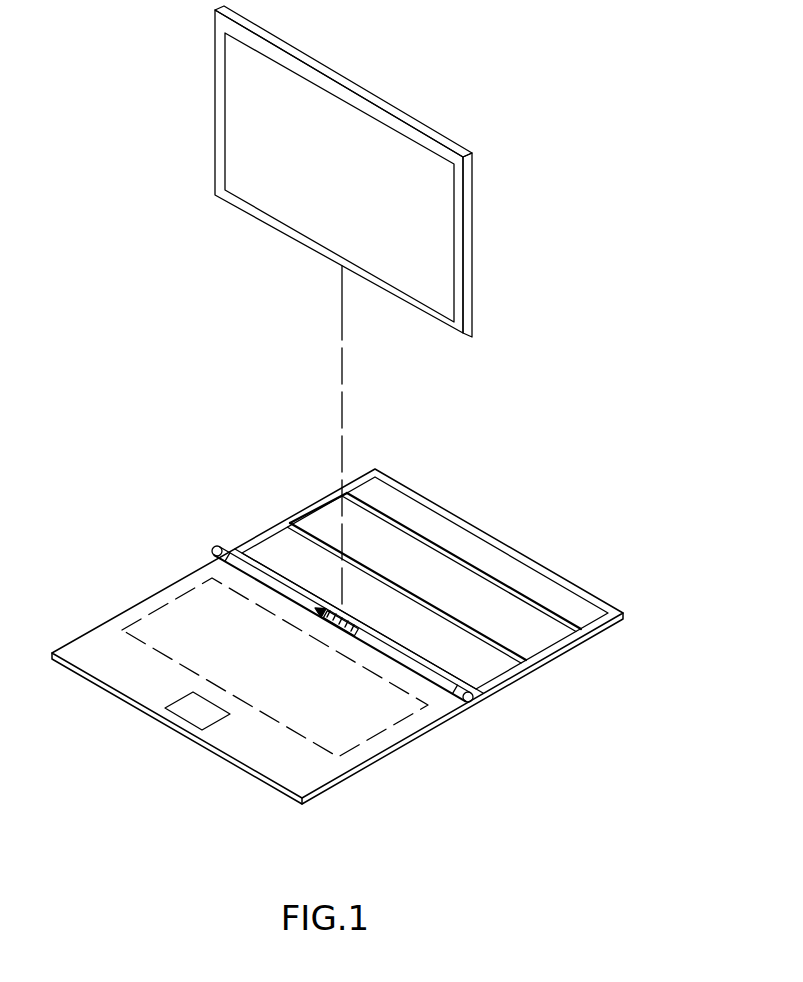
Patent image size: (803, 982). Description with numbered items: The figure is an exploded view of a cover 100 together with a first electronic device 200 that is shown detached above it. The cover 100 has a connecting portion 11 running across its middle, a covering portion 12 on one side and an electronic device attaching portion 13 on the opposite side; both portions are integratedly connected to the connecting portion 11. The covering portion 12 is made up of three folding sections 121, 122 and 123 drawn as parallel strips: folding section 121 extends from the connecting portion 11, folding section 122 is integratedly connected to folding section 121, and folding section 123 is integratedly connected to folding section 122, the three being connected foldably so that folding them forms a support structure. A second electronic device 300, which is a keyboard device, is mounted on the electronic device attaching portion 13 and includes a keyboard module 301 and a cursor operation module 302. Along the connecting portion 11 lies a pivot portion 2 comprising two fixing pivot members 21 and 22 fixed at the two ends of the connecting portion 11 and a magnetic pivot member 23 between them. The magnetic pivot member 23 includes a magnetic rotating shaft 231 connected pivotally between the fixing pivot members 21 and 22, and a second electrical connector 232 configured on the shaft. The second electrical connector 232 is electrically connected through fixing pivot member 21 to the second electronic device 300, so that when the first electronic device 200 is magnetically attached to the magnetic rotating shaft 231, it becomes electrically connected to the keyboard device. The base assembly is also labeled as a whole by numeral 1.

The first electronic device 200 is at (448, 124).
The cover 100 is at (100, 466).
The base 1 is at (102, 611).
The connecting portion 11 is at (476, 709).
The covering portion 12 is at (425, 605).
The folding section 121 is at (440, 642).
The folding section 122 is at (436, 578).
The folding section 123 is at (428, 516).
The electronic device attaching portion 13 is at (266, 709).
The pivot portion 2 is at (316, 607).
The fixing pivot member 21 is at (453, 686).
The fixing pivot member 22 is at (230, 563).
The magnetic pivot member 23 is at (273, 518).
The magnetic rotating shaft 231 is at (292, 597).
The second electrical connector 232 is at (306, 606).
The second electronic device 300 is at (246, 709).
The keyboard module 301 is at (137, 640).
The cursor operation module 302 is at (193, 739).